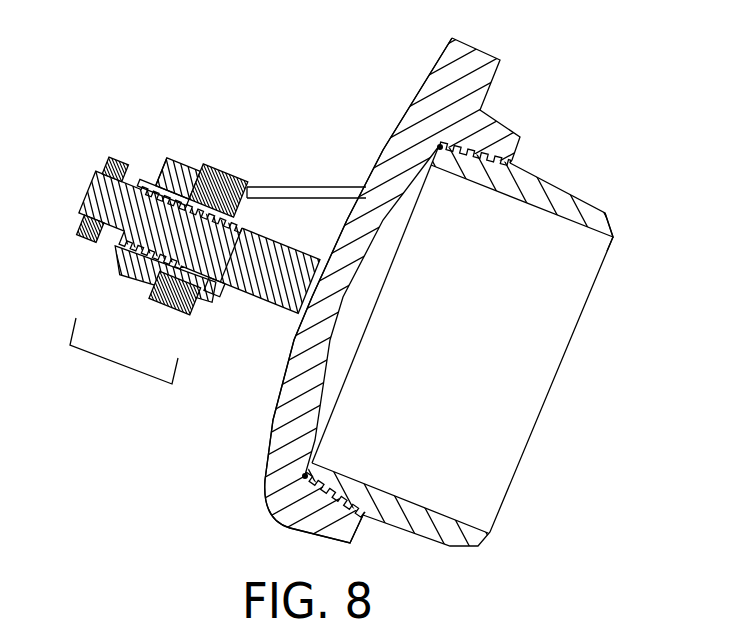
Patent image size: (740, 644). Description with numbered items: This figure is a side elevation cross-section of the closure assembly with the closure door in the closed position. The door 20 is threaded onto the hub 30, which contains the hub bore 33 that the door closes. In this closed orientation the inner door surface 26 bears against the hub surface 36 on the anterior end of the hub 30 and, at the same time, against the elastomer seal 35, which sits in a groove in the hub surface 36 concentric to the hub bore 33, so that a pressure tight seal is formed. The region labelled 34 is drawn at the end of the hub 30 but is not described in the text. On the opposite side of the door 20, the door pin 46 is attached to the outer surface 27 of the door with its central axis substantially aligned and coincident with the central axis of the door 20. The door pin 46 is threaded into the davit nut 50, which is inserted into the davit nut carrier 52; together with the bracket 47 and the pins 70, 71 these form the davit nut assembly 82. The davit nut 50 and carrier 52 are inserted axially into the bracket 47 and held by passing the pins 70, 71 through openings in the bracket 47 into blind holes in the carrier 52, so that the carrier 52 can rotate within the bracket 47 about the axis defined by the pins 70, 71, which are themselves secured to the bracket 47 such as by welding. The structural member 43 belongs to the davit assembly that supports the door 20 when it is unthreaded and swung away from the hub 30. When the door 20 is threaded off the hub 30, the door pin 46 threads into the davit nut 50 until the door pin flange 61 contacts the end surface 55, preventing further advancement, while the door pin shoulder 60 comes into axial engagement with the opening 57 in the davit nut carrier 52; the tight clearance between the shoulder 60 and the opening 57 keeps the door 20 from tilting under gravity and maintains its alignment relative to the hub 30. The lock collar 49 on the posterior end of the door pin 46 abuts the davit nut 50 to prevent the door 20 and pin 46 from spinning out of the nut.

The door 20 is at (440, 83).
The inner door surface 26 is at (300, 414).
The outer surface of door 27 is at (390, 147).
The hub 30 is at (578, 203).
The hub bore 33 is at (508, 458).
The end of nut 34 is at (614, 234).
The elastomer seal 35 is at (310, 472).
The hub surface 36 is at (342, 392).
The structural member 43 is at (300, 186).
The door pin 46 is at (88, 186).
The bracket 47 is at (194, 158).
The lock collar 49 is at (104, 165).
The davit nut 50 is at (143, 176).
The davit nut carrier 52 is at (166, 162).
The davit nut holder end surface 55 is at (207, 302).
The opening 57 is at (244, 229).
The door pin shoulder 60 is at (257, 302).
The door pin flange 61 is at (303, 246).
The pin 70 is at (164, 310).
The pin 71 is at (243, 168).
The davit nut assembly 82 is at (122, 368).